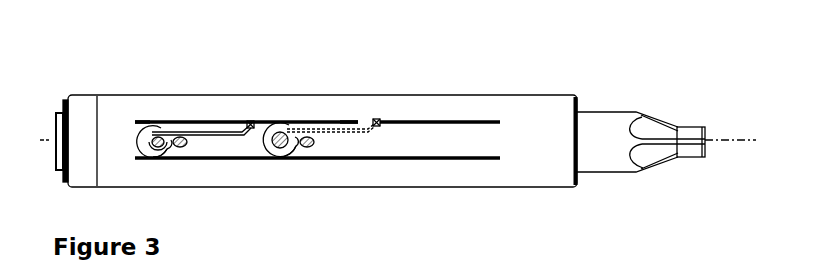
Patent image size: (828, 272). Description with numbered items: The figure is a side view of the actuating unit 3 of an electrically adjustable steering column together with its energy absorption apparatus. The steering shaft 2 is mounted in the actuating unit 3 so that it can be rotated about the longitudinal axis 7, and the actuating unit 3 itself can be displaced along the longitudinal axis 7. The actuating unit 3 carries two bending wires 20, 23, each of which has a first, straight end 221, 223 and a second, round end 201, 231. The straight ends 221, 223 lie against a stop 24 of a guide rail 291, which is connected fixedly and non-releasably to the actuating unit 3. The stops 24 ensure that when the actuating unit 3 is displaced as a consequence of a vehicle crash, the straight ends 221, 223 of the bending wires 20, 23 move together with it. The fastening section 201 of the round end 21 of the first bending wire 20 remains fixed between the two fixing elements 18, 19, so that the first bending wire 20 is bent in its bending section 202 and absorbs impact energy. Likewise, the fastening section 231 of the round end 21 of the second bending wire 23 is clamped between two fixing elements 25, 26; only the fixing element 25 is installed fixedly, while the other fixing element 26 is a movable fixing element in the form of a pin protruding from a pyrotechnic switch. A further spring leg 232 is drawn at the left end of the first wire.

The steering shaft 2 is at (603, 125).
The actuating unit 3 is at (493, 103).
The longitudinal axis 7 is at (728, 140).
The fixing element 18 is at (280, 148).
The fixing element 19 is at (307, 143).
The first bending wire 20 is at (325, 128).
The round end 21 is at (161, 150).
The second bending wire 23 is at (178, 120).
The stop 24 is at (250, 119).
The fixing element 25 is at (184, 157).
The movable fixing element 26 is at (151, 157).
The fastening section 201 is at (293, 148).
The bending section 202 is at (266, 130).
The straight end 221 is at (349, 125).
The straight end 223 is at (211, 120).
The fastening section 231 is at (166, 157).
The spring leg 232 is at (142, 120).
The guide rail 291 is at (418, 120).